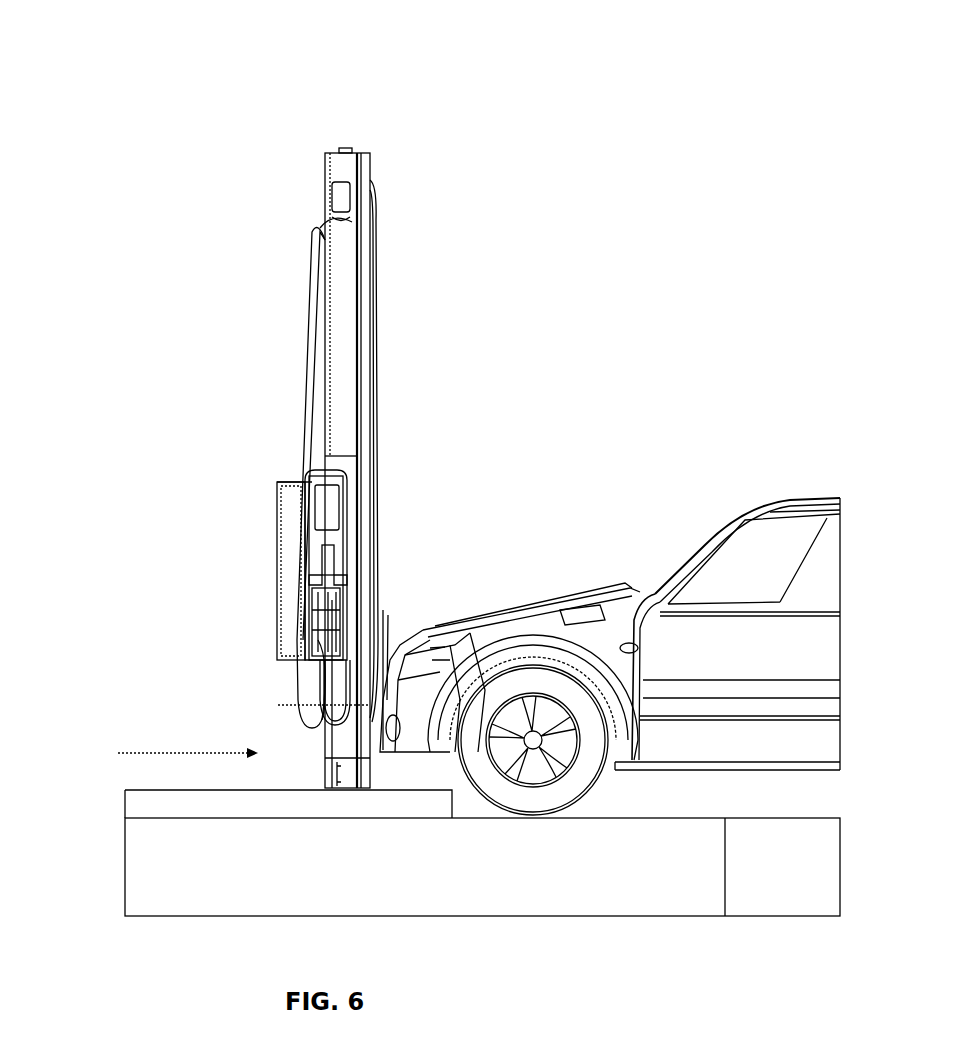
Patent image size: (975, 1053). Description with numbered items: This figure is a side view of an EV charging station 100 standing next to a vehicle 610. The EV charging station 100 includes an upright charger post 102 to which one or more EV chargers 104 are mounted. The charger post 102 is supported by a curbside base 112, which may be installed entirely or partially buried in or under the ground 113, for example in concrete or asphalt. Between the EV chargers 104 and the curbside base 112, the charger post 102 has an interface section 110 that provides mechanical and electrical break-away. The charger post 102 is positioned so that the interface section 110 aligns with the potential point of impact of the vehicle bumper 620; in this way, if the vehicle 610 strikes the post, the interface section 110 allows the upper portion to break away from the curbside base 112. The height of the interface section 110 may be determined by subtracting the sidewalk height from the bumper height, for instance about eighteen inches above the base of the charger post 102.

The EV charging station 100 is at (271, 98).
The charger post 102 is at (325, 303).
The EV charger 104 is at (288, 522).
The interface section 110 is at (157, 756).
The curbside base 112 is at (327, 775).
The ground 113 is at (138, 813).
The vehicle 610 is at (628, 455).
The vehicle bumper 620 is at (385, 618).